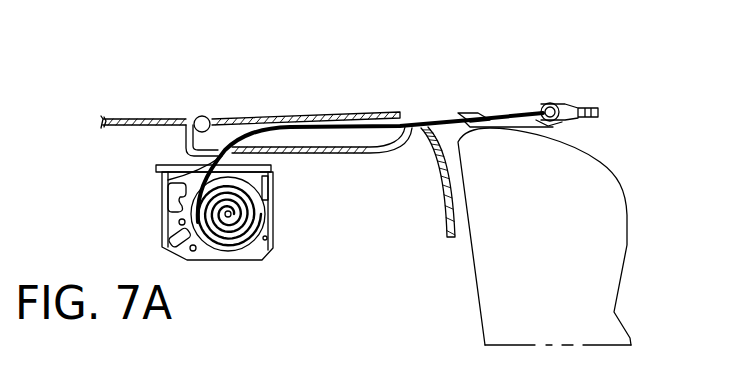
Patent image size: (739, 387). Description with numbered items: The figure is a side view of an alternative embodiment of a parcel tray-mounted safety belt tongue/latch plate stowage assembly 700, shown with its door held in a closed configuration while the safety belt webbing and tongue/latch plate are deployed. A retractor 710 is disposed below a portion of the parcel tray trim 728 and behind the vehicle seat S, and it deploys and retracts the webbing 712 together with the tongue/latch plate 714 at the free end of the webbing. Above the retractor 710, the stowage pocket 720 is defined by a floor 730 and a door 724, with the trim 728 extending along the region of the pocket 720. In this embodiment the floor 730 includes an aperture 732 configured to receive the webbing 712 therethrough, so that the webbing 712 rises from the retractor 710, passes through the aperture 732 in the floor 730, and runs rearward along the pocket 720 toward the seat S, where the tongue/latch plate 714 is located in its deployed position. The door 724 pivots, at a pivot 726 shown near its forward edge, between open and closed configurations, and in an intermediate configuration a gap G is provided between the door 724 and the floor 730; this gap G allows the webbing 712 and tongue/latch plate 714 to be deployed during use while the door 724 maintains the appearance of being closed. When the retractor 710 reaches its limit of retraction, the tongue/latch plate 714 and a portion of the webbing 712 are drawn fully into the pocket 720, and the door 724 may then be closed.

The parcel tray-mounted safety belt tongue/latch plate stowage assembly 700 is at (360, 153).
The retractor 710 is at (245, 262).
The webbing 712 is at (448, 110).
The tongue/latch plate 714 is at (570, 105).
The pocket 720 is at (256, 126).
The door 724 is at (297, 110).
The roller 726 is at (199, 116).
The trim cover 728 is at (114, 118).
The floor 730 is at (344, 160).
The aperture 732 is at (165, 172).
The gap G is at (445, 73).
The vehicle seat S is at (563, 267).